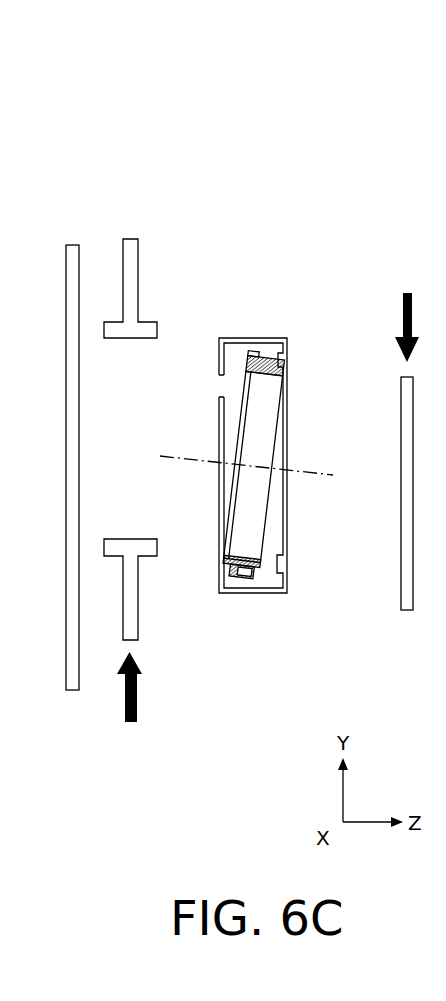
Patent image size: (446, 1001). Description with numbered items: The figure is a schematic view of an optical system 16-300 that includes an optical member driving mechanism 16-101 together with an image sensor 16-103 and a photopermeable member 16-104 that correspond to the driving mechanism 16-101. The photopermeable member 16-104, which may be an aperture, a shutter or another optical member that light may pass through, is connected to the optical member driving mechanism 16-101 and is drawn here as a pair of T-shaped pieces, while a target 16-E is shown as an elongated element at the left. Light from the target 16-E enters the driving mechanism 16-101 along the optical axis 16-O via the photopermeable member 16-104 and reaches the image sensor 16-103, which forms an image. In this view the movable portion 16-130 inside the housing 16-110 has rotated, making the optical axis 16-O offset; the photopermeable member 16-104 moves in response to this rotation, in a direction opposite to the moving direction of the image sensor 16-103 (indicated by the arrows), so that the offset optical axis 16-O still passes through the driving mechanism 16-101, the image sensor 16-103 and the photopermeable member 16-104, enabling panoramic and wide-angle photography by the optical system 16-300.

The optical system 16-300 is at (293, 32).
The target 16-E is at (72, 245).
The photopermeable member 16-104 is at (130, 239).
The optical member driving mechanism 16-101 is at (254, 322).
The housing 16-110 is at (219, 350).
The movable portion 16-130 is at (274, 397).
The optical axis 16-O is at (274, 474).
The image sensor 16-103 is at (407, 610).